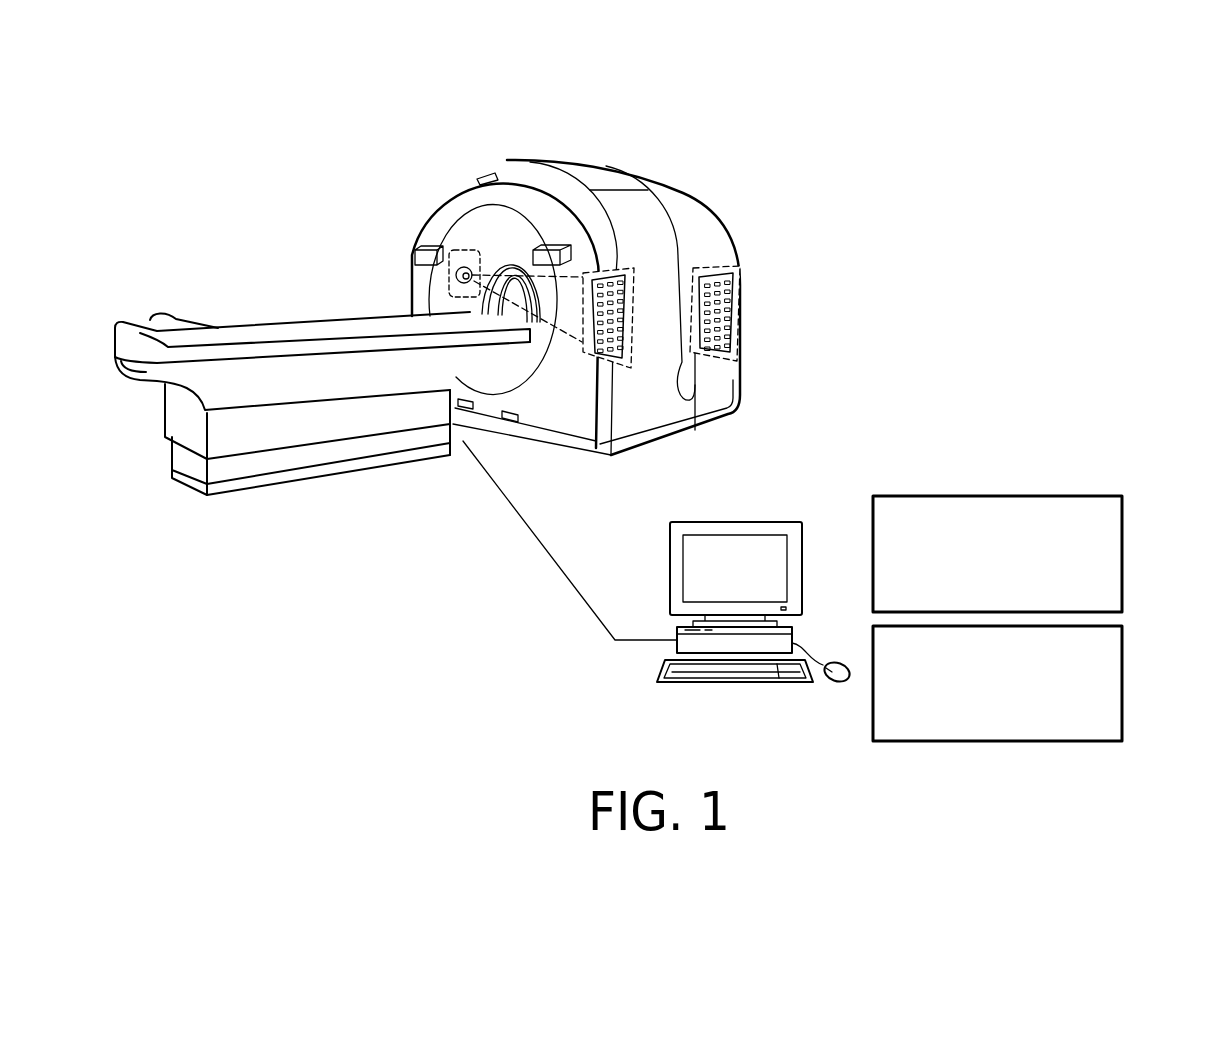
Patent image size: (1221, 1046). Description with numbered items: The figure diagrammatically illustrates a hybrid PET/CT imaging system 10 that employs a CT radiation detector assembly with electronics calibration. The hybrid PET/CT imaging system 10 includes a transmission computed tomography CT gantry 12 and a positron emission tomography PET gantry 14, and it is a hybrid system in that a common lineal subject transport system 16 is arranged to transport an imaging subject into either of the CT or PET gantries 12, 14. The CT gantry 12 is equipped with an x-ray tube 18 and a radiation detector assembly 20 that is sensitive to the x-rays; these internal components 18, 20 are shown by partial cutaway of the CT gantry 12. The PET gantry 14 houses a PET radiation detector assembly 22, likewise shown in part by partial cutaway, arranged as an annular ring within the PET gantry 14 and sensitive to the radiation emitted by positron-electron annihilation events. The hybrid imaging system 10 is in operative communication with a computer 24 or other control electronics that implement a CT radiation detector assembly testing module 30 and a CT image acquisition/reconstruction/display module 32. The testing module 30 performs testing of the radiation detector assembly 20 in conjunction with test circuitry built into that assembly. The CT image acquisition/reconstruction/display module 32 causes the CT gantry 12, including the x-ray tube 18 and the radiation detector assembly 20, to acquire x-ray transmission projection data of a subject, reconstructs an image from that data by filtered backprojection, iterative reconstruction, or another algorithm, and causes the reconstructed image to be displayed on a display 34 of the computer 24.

The hybrid PET/CT imaging system 10 is at (284, 154).
The CT gantry 12 is at (582, 172).
The PET gantry 14 is at (681, 193).
The lineal subject transport system 16 is at (317, 325).
The x-ray tube 18 is at (464, 270).
The radiation detector assembly 20 is at (632, 369).
The PET radiation detector assembly 22 is at (755, 320).
The computer 24 is at (640, 550).
The CT radiation detector assembly testing module 30 is at (1123, 553).
The CT image acquisition/reconstruction/display module 32 is at (1123, 682).
The display 34 is at (747, 583).